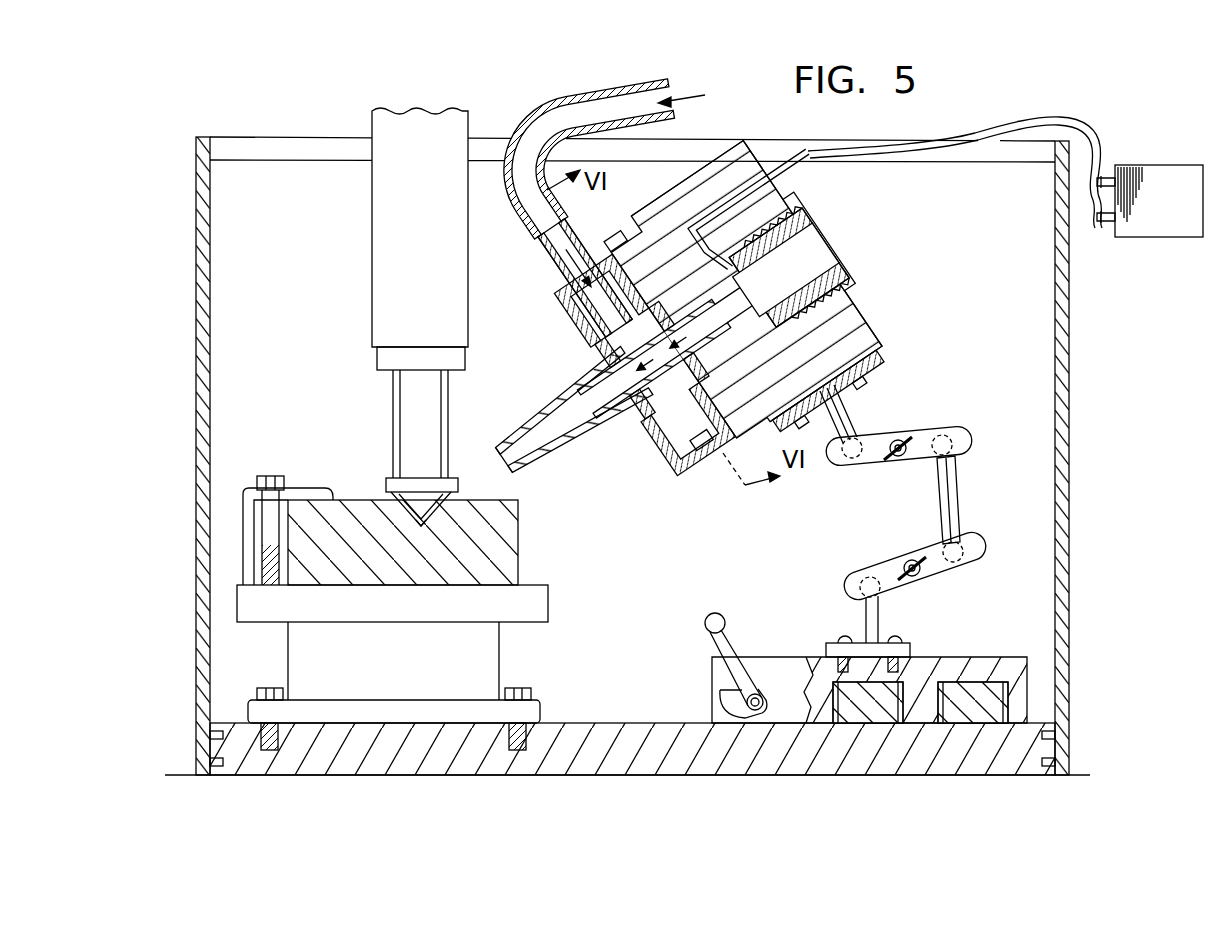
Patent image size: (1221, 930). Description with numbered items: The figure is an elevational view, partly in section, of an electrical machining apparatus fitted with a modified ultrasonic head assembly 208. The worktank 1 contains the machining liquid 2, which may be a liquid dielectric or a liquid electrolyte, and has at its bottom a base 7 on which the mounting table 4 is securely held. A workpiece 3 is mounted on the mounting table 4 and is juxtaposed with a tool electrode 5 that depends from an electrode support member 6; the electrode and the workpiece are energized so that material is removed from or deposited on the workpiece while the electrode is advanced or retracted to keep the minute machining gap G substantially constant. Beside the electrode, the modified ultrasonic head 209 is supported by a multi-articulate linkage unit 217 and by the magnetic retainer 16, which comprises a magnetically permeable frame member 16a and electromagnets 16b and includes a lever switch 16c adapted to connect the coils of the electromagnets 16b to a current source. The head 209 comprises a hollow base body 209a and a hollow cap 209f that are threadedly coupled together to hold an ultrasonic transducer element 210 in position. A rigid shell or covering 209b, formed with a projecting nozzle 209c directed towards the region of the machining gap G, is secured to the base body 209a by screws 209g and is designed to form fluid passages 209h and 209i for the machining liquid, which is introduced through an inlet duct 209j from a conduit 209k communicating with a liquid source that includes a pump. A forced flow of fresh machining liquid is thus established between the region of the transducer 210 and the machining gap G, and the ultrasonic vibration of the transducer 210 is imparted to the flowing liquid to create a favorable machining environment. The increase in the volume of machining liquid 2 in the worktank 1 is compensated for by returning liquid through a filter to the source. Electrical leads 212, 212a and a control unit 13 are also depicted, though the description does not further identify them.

The worktank 1 is at (200, 540).
The machining liquid 2 is at (205, 355).
The workpiece 3 is at (505, 551).
The mounting table 4 is at (295, 652).
The tool electrode 5 is at (383, 478).
The electrode support member 6 is at (378, 220).
The base 7 is at (580, 745).
The control box 13 is at (1155, 238).
The magnetic retainer 16 is at (998, 652).
The magnetically permeable frame member 16a is at (815, 663).
The electromagnets 16b is at (893, 688).
The lever switch 16c is at (705, 636).
The assembly 208 is at (1045, 356).
The ultrasonic head 209 is at (993, 330).
The hollow base body 209a is at (872, 350).
The rigid shell 209b is at (597, 442).
The projecting nozzle 209c is at (550, 455).
The hollow cap 209f is at (836, 266).
The screws 209g is at (633, 218).
The fluid passage 209h is at (617, 352).
The fluid passage 209i is at (577, 320).
The inlet duct 209j is at (558, 282).
The conduit 209k is at (522, 135).
The ultrasonic transducer element 210 is at (812, 268).
The power cable 212 is at (708, 214).
The power cable lead 212a is at (863, 153).
The multi-articulate linkage unit 217 is at (1030, 487).
The machining gap G is at (408, 517).